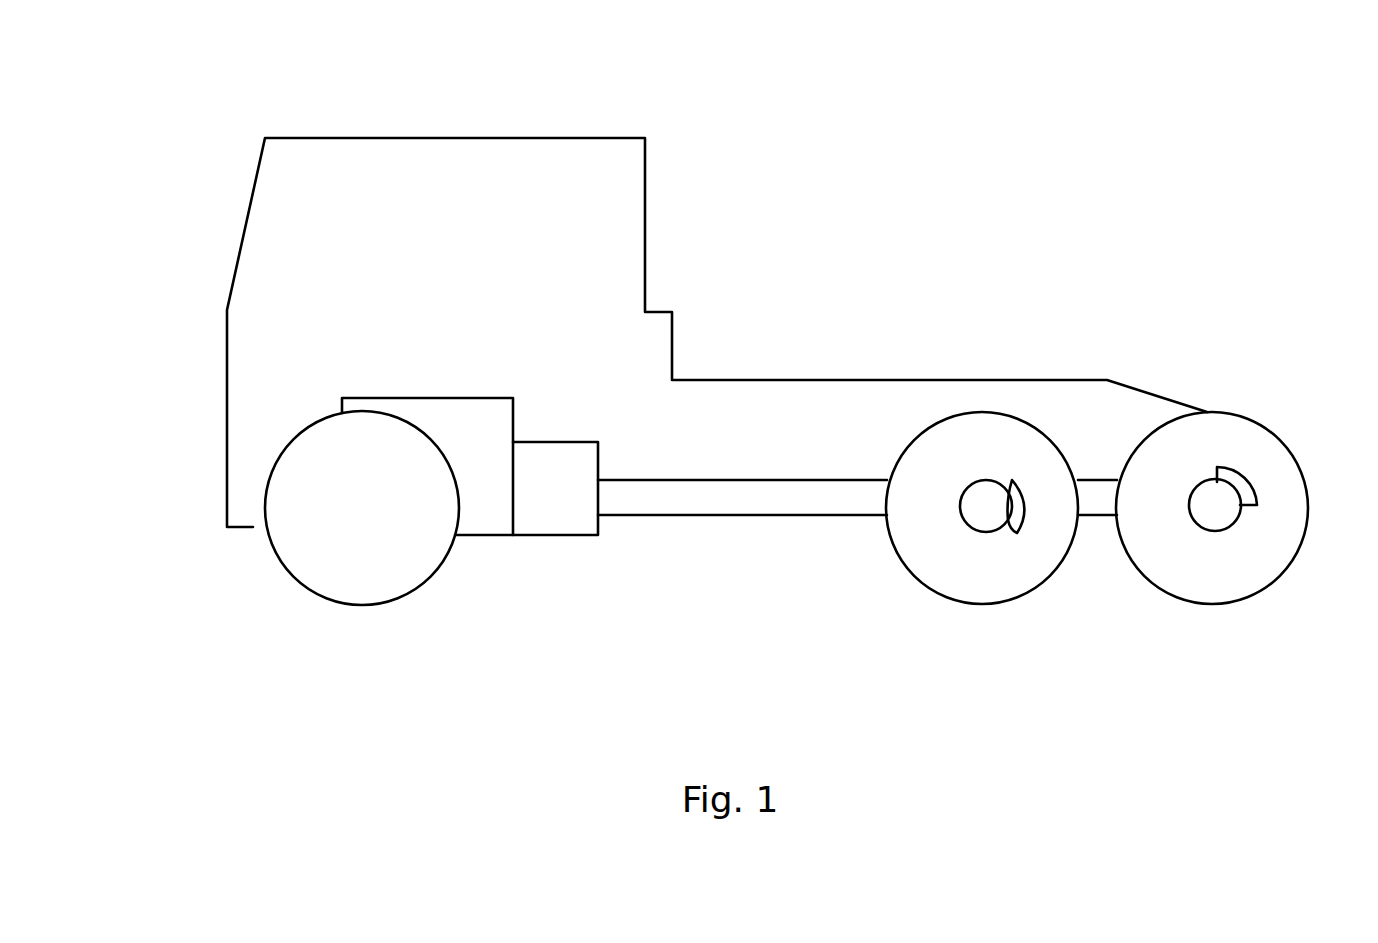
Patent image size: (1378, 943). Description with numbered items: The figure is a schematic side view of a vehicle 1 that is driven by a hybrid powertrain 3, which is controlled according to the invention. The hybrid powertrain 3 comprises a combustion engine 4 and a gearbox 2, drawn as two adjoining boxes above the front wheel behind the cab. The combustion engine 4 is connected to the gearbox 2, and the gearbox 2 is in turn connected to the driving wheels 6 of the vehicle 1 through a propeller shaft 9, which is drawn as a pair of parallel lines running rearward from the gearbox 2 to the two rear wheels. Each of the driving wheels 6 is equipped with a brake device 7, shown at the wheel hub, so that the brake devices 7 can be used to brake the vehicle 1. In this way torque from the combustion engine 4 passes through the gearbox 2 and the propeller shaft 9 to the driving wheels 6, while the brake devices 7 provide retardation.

The vehicle 1 is at (780, 110).
The gearbox 2 is at (587, 535).
The hybrid powertrain 3 is at (497, 486).
The combustion engine 4 is at (395, 397).
The driving wheels 6 is at (1033, 588).
The brake devices 7 is at (1017, 487).
The propeller shaft 9 is at (713, 515).